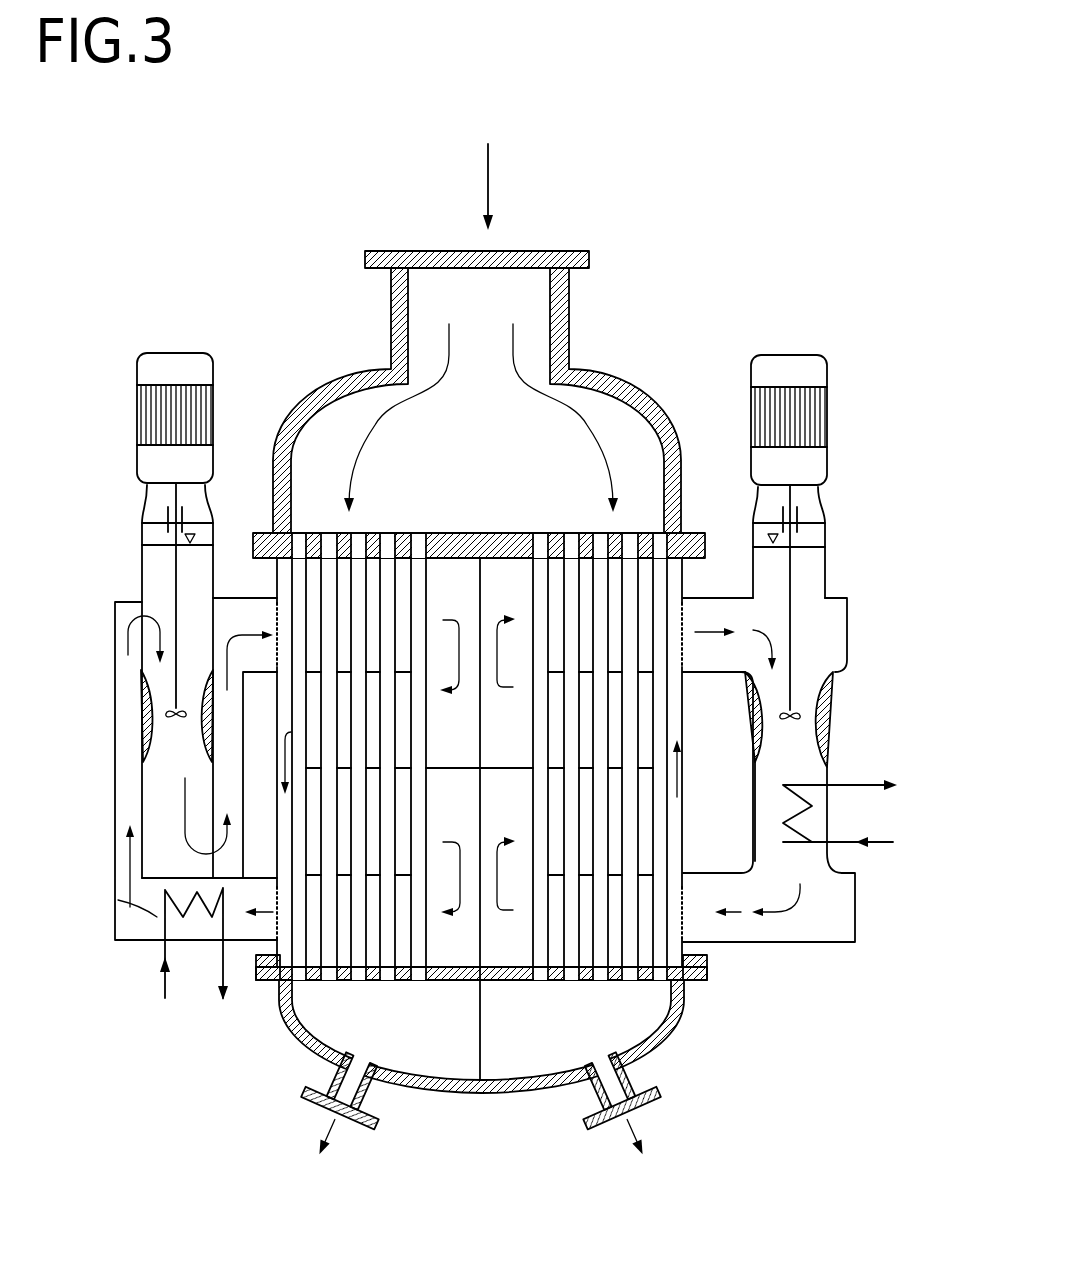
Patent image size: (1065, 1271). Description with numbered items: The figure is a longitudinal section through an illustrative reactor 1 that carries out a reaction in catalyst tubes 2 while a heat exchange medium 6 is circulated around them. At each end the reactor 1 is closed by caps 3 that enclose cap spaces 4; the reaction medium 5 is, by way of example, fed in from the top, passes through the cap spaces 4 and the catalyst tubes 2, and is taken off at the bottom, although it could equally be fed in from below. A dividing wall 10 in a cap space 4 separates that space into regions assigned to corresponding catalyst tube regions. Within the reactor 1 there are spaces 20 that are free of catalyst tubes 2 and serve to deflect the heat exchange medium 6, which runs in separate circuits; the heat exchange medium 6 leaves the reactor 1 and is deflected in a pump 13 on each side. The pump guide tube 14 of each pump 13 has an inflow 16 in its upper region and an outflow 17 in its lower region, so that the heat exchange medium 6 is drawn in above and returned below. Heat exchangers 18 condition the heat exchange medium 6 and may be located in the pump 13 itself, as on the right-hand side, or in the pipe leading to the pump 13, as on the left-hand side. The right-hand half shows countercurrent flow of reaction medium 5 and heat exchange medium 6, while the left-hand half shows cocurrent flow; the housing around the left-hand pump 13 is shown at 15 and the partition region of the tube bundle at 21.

The reactor 1 is at (590, 300).
The catalyst tubes 2 is at (317, 940).
The caps 3 is at (618, 372).
The cap spaces 4 is at (627, 447).
The reaction medium 5 is at (495, 187).
The heat exchange medium 6 is at (500, 638).
The dividing walls 10 is at (478, 1023).
The pump 13 is at (120, 582).
The pump guide tube 14 is at (145, 777).
The pump housing 15 is at (115, 842).
The inflow 16 is at (140, 643).
The outflow 17 is at (213, 838).
The heat exchangers 18 is at (163, 948).
The spaces free of catalyst tubes 20 is at (285, 850).
The intermediate plates 21 is at (513, 765).